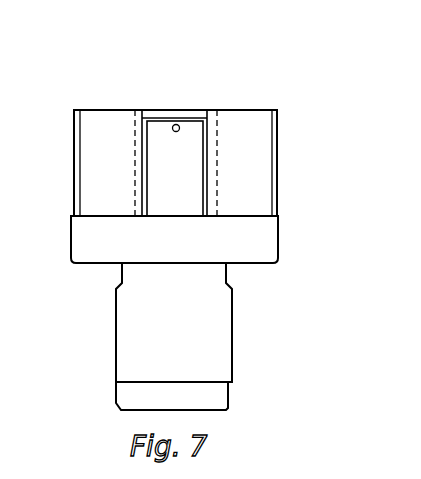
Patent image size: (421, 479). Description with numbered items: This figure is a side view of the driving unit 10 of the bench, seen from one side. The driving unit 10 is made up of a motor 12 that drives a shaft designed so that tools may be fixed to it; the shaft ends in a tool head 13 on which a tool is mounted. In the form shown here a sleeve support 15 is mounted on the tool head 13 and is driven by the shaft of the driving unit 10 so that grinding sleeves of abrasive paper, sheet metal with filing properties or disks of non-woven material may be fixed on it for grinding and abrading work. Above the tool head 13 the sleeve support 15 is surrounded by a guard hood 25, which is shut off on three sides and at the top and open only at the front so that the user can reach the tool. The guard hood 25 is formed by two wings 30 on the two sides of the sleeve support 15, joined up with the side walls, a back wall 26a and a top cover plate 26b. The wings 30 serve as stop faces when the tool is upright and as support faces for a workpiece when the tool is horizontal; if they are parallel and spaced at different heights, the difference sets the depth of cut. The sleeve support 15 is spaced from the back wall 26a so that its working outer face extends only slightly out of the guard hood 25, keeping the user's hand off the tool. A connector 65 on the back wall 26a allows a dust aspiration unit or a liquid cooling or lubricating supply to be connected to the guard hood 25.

The driving unit 10 is at (237, 303).
The motor 12 is at (185, 347).
The tool head 13 is at (186, 256).
The sleeve support 15 is at (190, 185).
The guard hood 25 is at (108, 107).
The back wall 26a is at (175, 116).
The top cover plate 26b is at (214, 112).
The wings 30 is at (120, 185).
The connector 65 is at (180, 127).